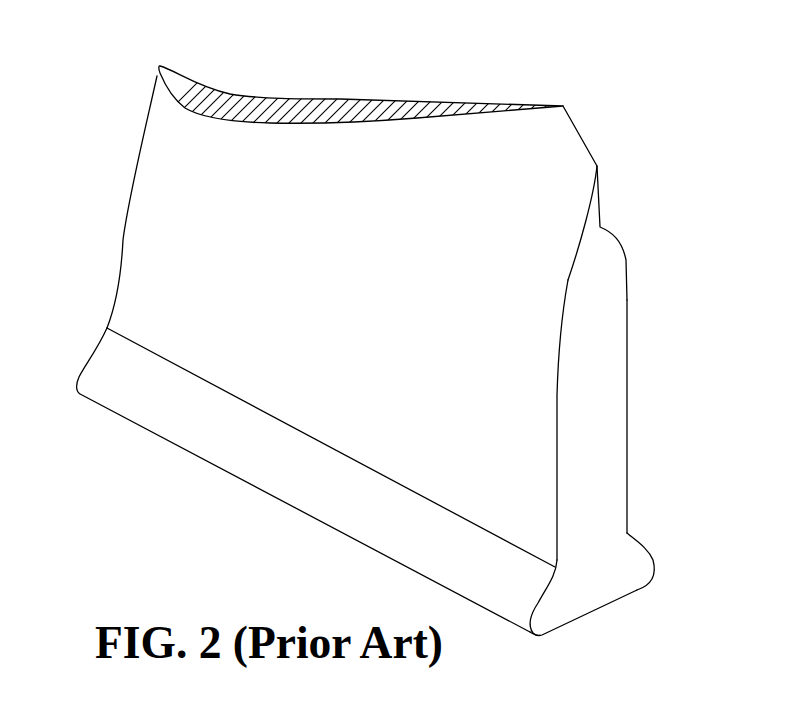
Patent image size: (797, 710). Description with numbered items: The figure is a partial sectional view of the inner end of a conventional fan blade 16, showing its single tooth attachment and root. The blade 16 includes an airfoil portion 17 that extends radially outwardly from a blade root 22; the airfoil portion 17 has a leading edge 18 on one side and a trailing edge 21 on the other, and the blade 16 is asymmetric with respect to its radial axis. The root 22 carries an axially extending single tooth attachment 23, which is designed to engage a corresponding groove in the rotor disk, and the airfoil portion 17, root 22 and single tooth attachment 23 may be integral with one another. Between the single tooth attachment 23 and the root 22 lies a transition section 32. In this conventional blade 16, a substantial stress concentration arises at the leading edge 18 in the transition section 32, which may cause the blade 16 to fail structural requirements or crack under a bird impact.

The blade 16 is at (638, 227).
The airfoil portion 17 is at (433, 175).
The leading edge 18 is at (153, 77).
The trailing edge 21 is at (587, 143).
The blade root 22 is at (587, 482).
The transition section 32 is at (628, 533).
The single tooth attachment 23 is at (603, 587).